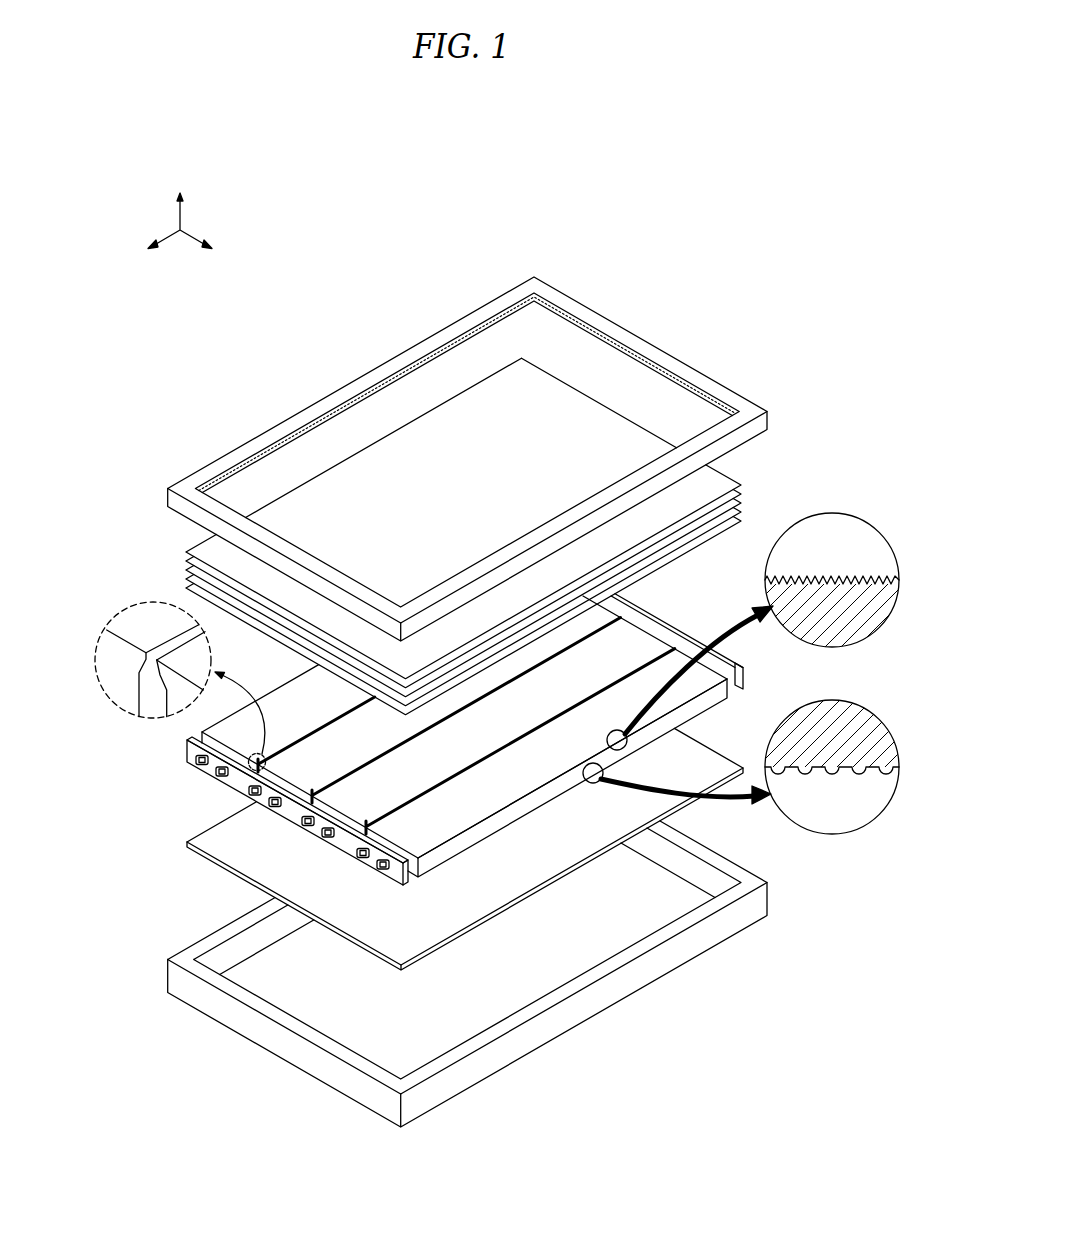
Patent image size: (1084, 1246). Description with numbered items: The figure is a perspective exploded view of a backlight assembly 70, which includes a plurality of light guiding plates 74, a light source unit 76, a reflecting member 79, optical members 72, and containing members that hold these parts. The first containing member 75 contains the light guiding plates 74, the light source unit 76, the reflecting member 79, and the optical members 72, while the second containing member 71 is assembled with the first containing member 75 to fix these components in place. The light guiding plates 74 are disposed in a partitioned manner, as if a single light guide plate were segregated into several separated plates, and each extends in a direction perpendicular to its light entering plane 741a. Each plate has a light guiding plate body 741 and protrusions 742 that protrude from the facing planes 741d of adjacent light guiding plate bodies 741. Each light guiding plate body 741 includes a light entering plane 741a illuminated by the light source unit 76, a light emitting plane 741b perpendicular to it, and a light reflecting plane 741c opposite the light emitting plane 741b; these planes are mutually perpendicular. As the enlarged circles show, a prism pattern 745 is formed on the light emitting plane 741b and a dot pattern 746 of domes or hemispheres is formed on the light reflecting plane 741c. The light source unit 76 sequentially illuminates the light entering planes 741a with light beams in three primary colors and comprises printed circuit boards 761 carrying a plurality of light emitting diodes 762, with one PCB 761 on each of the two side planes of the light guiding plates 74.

The backlight assembly 70 is at (425, 258).
The second containing member 71 is at (770, 421).
The optical members 72 is at (746, 485).
The light guiding plates 74 is at (631, 643).
The light guiding plate body 741 is at (511, 820).
The light entering plane 741a is at (408, 876).
The light emitting plane 741b is at (457, 803).
The light reflecting plane 741c is at (458, 853).
The facing planes 741d is at (350, 833).
The protrusions 742 is at (143, 658).
The prism pattern 745 is at (843, 578).
The dot pattern 746 is at (862, 770).
The first containing member 75 is at (770, 897).
The light source unit 76 is at (466, 739).
The printed circuit boards 761 is at (200, 774).
The light emitting diodes 762 is at (215, 778).
The reflecting member 79 is at (698, 757).